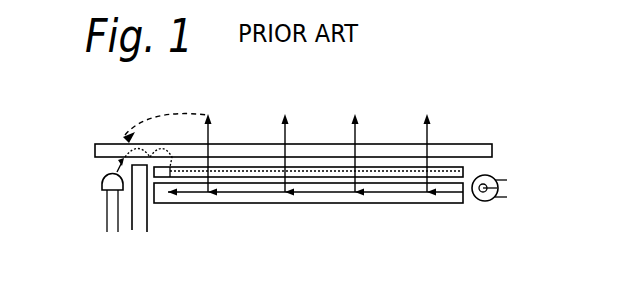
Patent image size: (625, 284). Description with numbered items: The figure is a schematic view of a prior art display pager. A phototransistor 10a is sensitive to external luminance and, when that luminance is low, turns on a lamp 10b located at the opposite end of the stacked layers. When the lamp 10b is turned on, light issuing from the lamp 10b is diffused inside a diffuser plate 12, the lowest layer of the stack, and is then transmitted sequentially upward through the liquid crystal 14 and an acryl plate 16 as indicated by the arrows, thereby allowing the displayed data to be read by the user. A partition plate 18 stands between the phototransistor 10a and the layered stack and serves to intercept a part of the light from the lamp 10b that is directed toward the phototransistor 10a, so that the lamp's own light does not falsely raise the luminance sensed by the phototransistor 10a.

The phototransistor 10a is at (102, 182).
The lamp 10b is at (488, 201).
The diffuser plate 12 is at (455, 203).
The liquid crystal 14 is at (463, 171).
The acryl plate 16 is at (492, 150).
The partition plate 18 is at (140, 225).